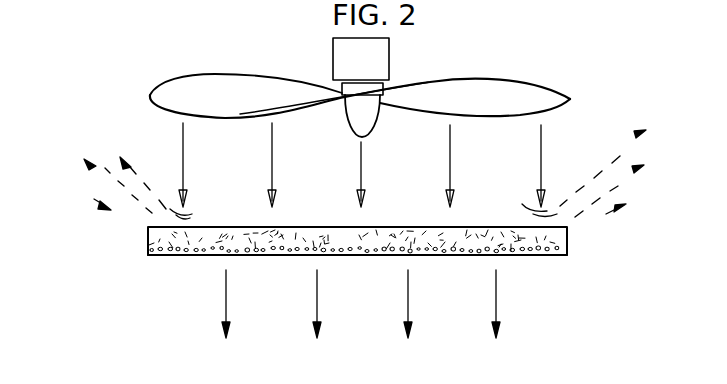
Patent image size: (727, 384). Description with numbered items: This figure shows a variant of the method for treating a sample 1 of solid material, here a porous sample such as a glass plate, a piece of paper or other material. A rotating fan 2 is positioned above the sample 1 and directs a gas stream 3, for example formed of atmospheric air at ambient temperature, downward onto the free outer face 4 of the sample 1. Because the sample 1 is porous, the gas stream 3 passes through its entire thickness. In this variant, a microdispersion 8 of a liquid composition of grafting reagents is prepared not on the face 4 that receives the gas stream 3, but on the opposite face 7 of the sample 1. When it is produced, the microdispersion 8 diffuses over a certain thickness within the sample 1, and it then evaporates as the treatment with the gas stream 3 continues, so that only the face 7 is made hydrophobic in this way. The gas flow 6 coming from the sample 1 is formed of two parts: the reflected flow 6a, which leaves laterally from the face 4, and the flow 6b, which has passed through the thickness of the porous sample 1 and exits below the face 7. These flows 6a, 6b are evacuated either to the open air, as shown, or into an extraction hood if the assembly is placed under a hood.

The sample 1 is at (363, 247).
The rotating fan 2 is at (477, 87).
The gas stream 3 is at (535, 140).
The free outer face 4 is at (382, 226).
The gas flow 6 is at (363, 211).
The reflected flow 6a is at (123, 205).
The flow having passed through the sample 6b is at (462, 313).
The opposite face 7 is at (186, 256).
The microdispersion 8 is at (282, 257).